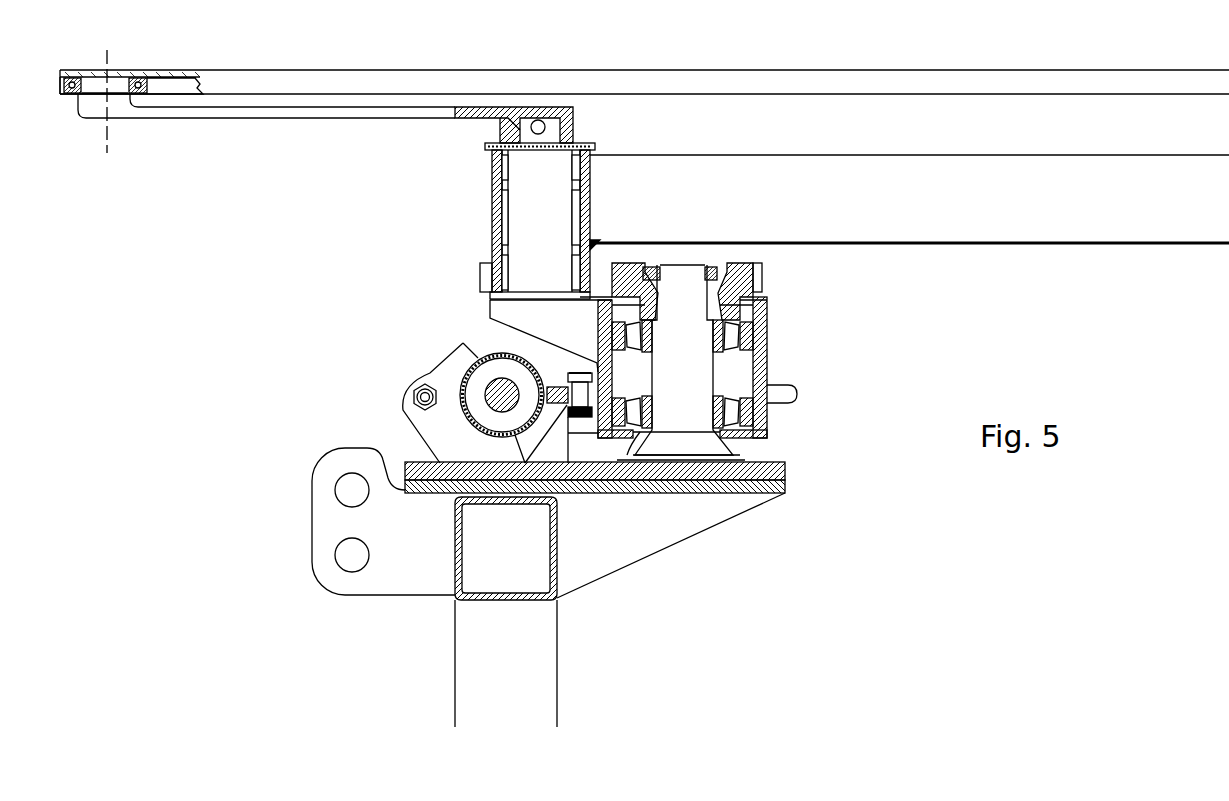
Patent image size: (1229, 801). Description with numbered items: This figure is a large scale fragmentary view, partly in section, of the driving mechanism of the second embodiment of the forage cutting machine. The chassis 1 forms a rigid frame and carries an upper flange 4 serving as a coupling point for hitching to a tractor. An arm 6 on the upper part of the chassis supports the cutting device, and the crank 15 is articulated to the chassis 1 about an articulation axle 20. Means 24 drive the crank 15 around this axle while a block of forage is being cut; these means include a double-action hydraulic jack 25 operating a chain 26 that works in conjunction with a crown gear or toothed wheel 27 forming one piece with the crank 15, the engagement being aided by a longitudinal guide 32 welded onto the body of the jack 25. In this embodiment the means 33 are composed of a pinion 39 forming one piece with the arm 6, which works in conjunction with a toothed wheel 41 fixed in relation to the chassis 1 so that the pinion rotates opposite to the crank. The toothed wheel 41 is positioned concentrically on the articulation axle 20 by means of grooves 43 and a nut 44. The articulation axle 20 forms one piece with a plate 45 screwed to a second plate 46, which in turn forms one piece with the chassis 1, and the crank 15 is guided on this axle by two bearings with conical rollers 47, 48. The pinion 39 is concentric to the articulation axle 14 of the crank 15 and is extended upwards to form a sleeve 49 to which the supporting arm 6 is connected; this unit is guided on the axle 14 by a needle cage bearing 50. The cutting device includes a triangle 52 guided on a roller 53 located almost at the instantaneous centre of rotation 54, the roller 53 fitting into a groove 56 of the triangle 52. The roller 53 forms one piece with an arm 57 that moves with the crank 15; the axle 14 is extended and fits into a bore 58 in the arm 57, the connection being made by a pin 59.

The chassis 1 is at (535, 632).
The upper flange 4 is at (345, 523).
The arm 6 is at (992, 218).
The articulation axle 14 is at (545, 208).
The crank 15 is at (530, 312).
The articulation axle 20 is at (700, 388).
The means 24 is at (586, 436).
The double-action hydraulic jack 25 is at (472, 378).
The chain 26 is at (570, 417).
The crown gear or toothed wheel 27 is at (786, 398).
The longitudinal guide 32 is at (555, 386).
The means 33 is at (476, 289).
The pinion 39 is at (480, 275).
The toothed wheel 41 is at (762, 277).
The grooves 43 is at (740, 306).
The nut 44 is at (713, 265).
The plate 45 is at (782, 470).
The second plate 46 is at (780, 493).
The bearing with conical rollers 47 is at (755, 342).
The bearing with conical rollers 48 is at (765, 425).
The sleeve 49 is at (492, 170).
The needle cage bearing 50 is at (492, 207).
The triangle 52 is at (715, 75).
The roller 53 is at (140, 77).
The instantaneous centre of rotation 54 is at (107, 143).
The groove 56 is at (192, 72).
The arm 57 is at (342, 112).
The bore 58 is at (573, 125).
The pin 59 is at (538, 120).